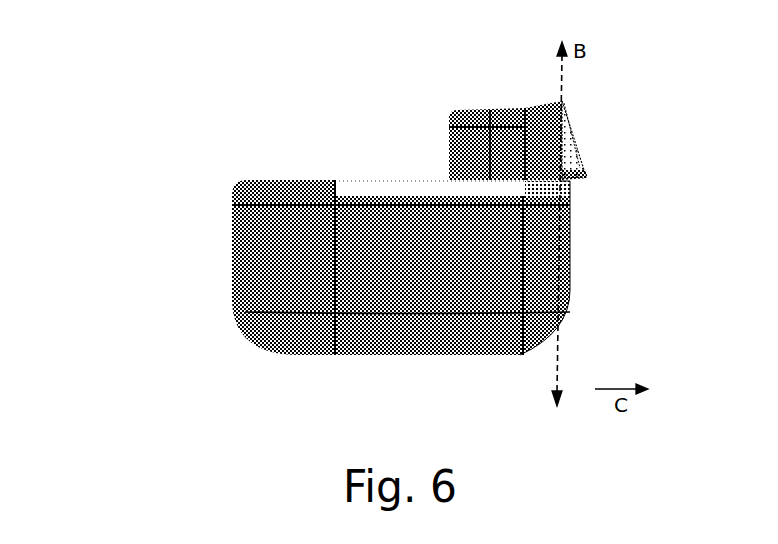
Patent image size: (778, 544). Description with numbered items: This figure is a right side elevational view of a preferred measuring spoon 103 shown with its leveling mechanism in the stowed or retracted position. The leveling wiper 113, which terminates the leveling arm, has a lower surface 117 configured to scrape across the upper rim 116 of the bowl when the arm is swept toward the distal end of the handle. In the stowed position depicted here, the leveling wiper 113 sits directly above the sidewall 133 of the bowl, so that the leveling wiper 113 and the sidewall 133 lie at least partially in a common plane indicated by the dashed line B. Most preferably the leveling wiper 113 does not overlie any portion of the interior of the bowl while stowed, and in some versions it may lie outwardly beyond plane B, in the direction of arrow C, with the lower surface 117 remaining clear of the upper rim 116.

The seating furniture 103 is at (353, 216).
The leveling wiper 113 is at (577, 123).
The lower surface 117 is at (587, 170).
The upper rim 116 is at (566, 190).
The sidewall 133 is at (571, 268).